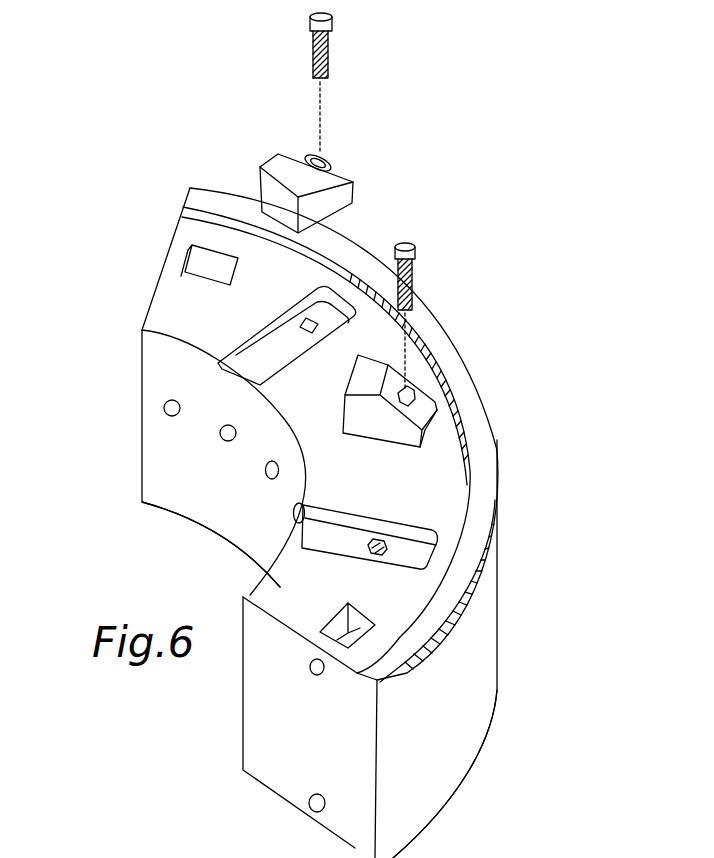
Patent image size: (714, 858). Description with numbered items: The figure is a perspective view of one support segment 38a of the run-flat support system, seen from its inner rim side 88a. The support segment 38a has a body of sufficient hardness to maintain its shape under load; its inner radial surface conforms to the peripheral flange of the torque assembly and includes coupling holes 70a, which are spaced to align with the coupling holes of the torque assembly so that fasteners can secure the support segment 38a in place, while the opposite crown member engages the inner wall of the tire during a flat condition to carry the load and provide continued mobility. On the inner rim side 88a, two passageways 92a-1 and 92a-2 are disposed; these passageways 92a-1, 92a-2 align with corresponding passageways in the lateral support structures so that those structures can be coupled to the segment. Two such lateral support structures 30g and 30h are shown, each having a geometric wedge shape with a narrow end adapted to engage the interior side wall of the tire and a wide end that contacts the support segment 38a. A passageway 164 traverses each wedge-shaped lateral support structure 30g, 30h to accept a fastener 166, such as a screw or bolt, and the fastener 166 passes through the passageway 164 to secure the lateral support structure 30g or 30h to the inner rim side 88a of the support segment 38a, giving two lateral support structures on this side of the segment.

The fastener 166 is at (332, 25).
The passageway 164 is at (327, 160).
The lateral support structure 30g is at (333, 167).
The lateral support structure 30h is at (415, 390).
The passageway 92a-1 is at (392, 543).
The passageway 92a-2 is at (250, 363).
The inner rim side 88a is at (273, 578).
The coupling holes 70a is at (498, 692).
The support segment 38a is at (465, 790).